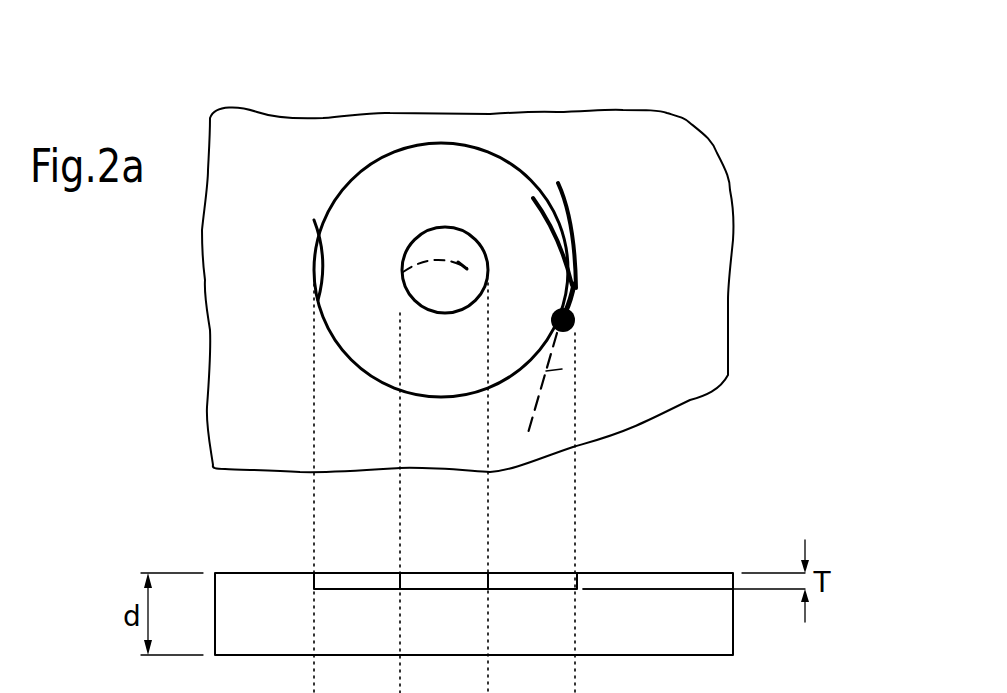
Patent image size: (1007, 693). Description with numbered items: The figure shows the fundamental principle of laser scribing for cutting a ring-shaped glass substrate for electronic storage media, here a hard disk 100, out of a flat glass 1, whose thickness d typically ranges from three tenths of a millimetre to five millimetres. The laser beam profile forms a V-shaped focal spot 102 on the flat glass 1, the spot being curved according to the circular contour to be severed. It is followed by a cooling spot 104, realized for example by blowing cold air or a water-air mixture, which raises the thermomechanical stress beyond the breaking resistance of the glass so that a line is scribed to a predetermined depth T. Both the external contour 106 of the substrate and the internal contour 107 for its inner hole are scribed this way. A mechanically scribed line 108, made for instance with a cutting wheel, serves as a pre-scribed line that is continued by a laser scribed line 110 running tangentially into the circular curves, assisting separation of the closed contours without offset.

The flat glass 1 is at (653, 197).
The hard disk 100 is at (368, 156).
The V-shaped focal spot 102 is at (570, 207).
The cooling spot 104 is at (576, 320).
The external contour 106 is at (314, 232).
The internal contour 107 is at (400, 272).
The mechanically scribed line 108 is at (463, 264).
The laser scribed line 110 is at (430, 256).